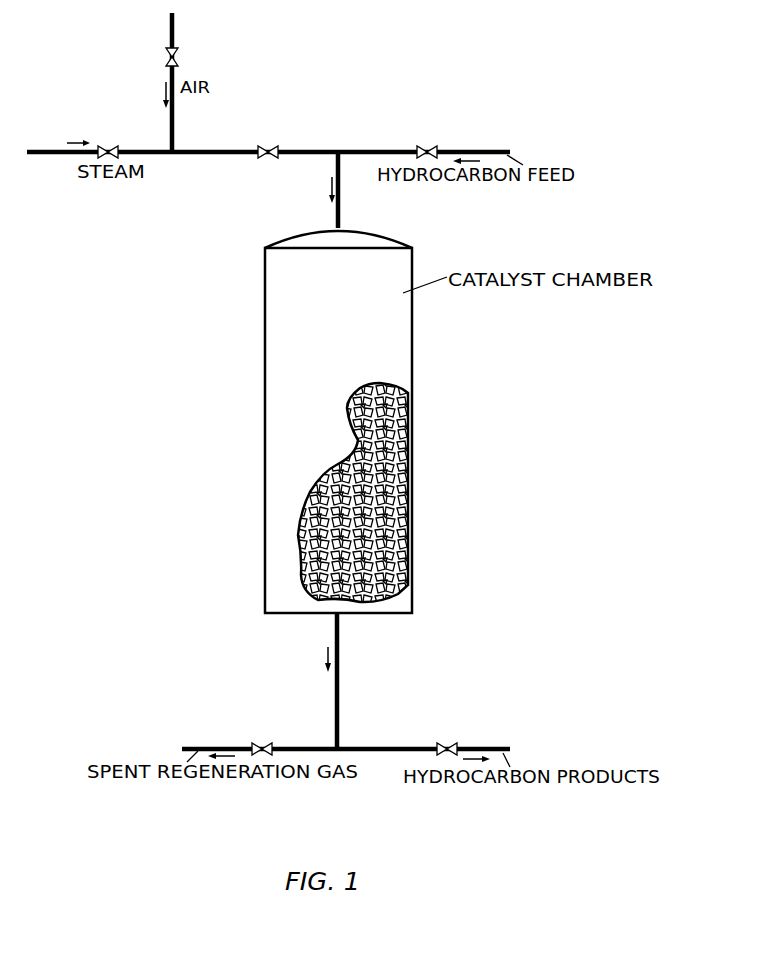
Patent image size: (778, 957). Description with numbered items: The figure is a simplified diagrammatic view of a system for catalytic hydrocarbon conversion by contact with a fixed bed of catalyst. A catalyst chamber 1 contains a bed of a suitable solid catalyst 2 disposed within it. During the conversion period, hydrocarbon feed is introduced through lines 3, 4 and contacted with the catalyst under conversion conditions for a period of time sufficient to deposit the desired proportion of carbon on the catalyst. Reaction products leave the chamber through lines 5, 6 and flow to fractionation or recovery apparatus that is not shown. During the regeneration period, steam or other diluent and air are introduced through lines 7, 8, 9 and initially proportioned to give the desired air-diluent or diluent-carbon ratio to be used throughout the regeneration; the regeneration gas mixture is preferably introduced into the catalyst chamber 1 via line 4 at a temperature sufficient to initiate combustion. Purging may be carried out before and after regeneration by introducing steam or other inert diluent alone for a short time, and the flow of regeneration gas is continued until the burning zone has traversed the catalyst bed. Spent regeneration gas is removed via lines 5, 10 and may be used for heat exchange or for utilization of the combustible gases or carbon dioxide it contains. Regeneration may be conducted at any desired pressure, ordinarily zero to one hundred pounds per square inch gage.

The catalyst chamber 1 is at (415, 363).
The solid catalyst 2 is at (408, 465).
The hydrocarbon feed line 3 is at (457, 152).
The inlet line 4 is at (342, 212).
The outlet line 5 is at (338, 718).
The reaction products line 6 is at (468, 750).
The air line 7 is at (192, 72).
The steam line 8 is at (60, 147).
The regeneration gas header line 9 is at (238, 155).
The spent regeneration gas line 10 is at (223, 747).